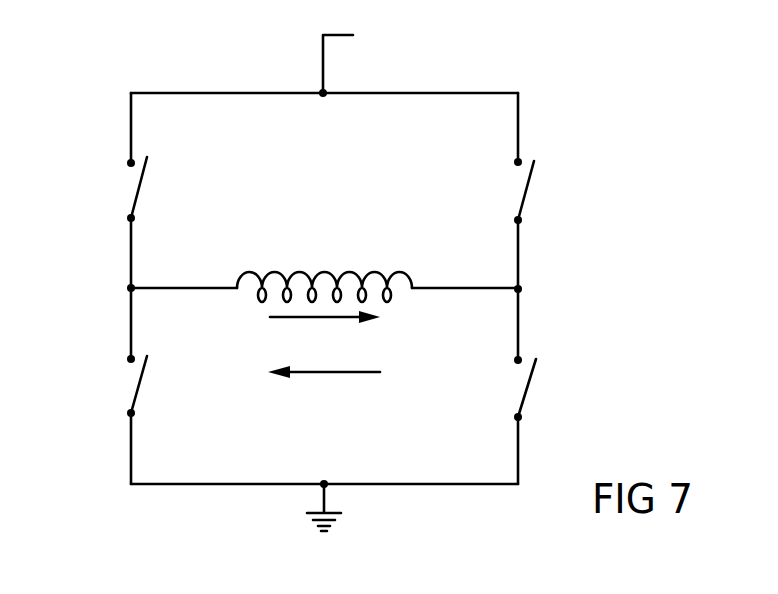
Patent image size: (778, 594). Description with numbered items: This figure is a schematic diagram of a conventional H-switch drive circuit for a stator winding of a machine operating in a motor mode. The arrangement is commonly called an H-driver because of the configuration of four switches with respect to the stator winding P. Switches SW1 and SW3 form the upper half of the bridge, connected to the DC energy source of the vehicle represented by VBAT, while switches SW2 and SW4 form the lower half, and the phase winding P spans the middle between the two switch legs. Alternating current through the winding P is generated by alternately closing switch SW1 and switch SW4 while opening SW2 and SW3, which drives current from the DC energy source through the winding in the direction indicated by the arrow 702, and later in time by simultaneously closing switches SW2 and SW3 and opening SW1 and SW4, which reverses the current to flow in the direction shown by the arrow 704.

The arrow 702 is at (322, 318).
The arrow 704 is at (312, 373).
The stator winding P is at (333, 273).
The switch SW1 is at (140, 184).
The switch SW2 is at (141, 381).
The switch SW3 is at (527, 191).
The switch SW4 is at (534, 371).
The DC energy source VBAT is at (390, 39).